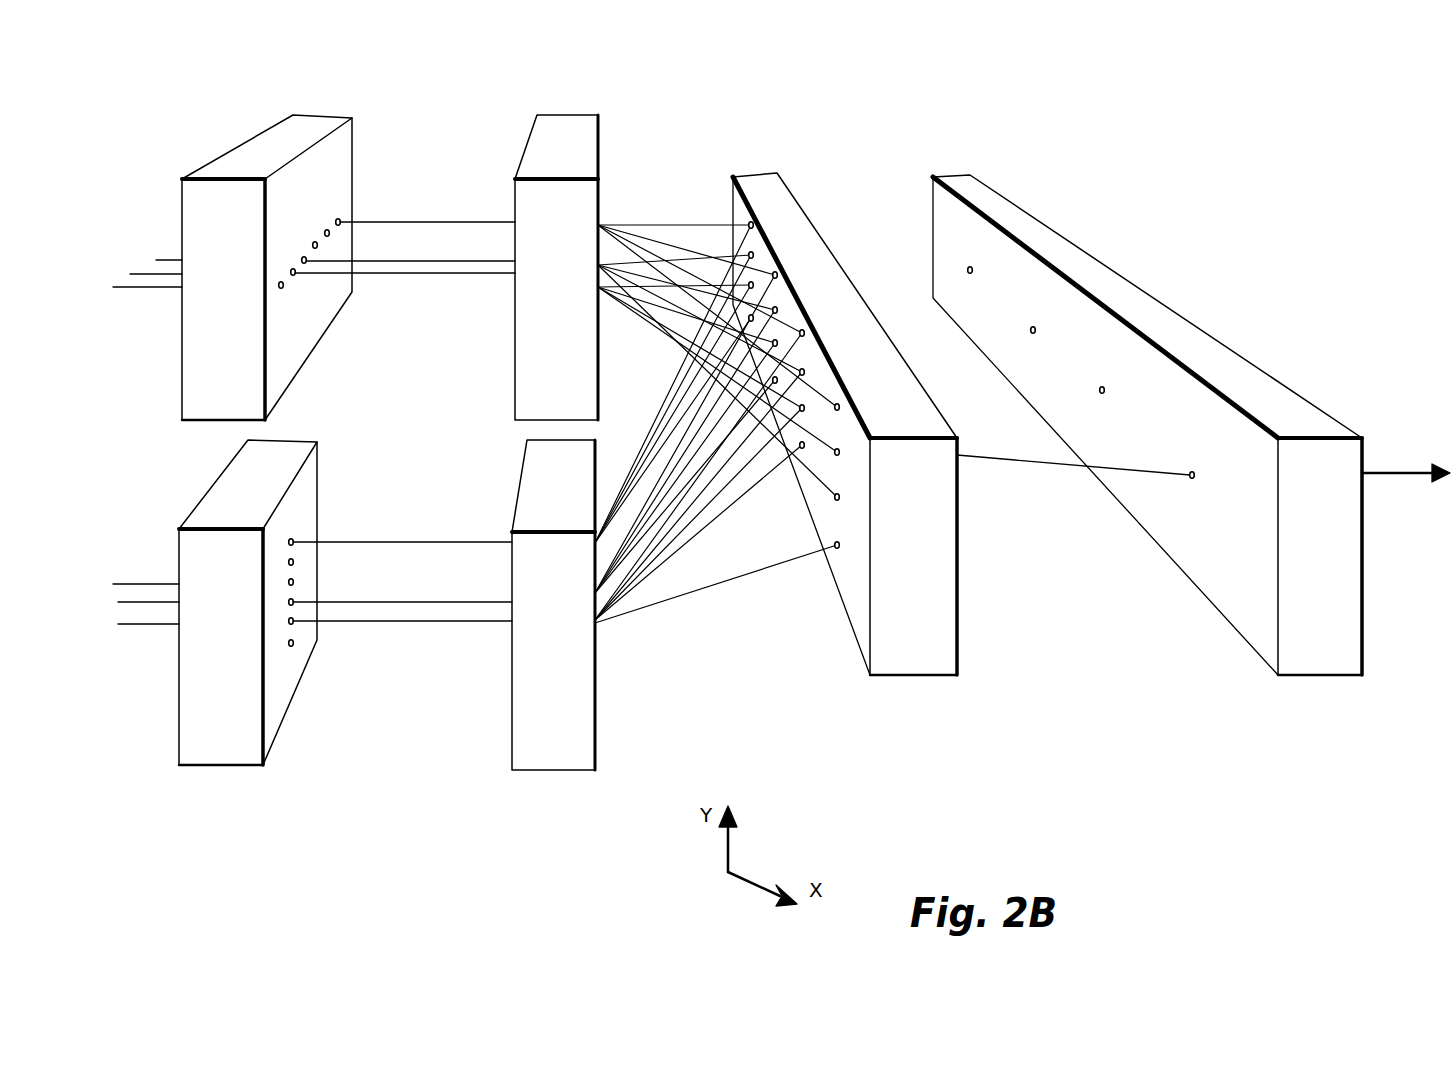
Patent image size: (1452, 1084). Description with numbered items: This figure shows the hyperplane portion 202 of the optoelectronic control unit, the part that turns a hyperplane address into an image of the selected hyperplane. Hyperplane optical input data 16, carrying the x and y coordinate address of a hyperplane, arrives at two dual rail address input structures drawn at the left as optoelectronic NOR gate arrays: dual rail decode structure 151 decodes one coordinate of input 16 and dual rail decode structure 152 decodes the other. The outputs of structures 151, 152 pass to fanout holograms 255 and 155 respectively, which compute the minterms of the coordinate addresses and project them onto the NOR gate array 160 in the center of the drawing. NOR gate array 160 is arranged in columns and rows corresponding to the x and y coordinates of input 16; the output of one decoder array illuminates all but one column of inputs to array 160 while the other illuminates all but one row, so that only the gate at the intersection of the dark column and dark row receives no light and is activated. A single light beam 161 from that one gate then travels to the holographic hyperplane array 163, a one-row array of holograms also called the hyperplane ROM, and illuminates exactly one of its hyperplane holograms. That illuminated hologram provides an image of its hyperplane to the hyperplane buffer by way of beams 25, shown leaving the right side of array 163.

The hyperplane optical input data 16 is at (140, 274).
The beams 25 is at (1427, 470).
The dual rail NOR gate structure 151 is at (197, 765).
The dual rail NOR gate structure 152 is at (343, 147).
The fanout hologram 155 is at (598, 160).
The fanout hologram 255 is at (587, 722).
The NOR gate array 160 is at (880, 675).
The light beam 161 is at (987, 458).
The holographic hyperplane array 163 is at (1349, 675).
The hyperplane portion 202 is at (1347, 841).